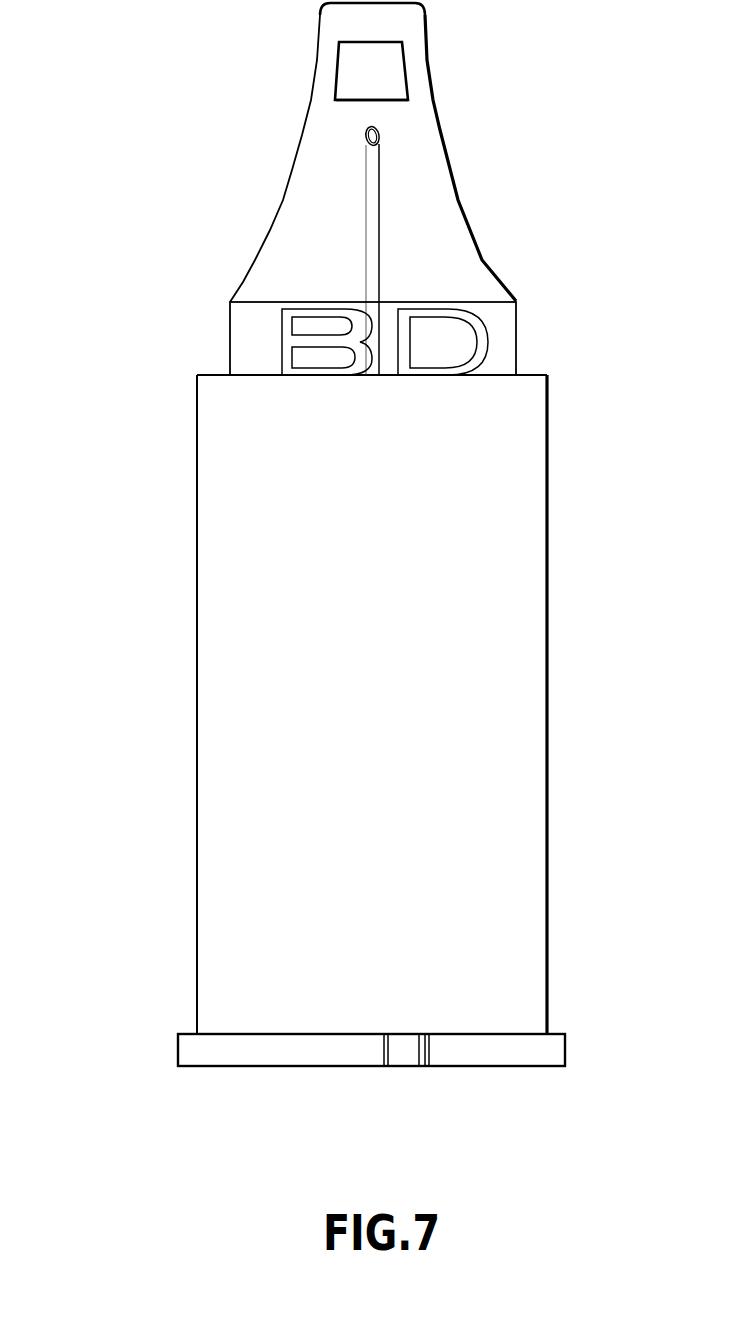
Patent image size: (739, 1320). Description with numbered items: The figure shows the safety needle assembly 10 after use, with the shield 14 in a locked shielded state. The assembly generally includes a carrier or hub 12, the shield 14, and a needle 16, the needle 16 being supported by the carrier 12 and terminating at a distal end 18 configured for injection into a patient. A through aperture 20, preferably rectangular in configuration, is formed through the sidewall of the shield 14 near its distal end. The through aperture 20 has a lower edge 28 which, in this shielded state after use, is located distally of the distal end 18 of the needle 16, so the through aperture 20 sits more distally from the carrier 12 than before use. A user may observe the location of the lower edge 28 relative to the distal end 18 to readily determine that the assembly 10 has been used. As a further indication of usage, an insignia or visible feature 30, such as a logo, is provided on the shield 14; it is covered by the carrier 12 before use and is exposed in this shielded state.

The safety needle assembly 10 is at (152, 618).
The carrier or hub 12 is at (548, 683).
The shield 14 is at (460, 197).
The needle 16 is at (365, 230).
The distal end 18 is at (367, 129).
The through aperture 20 is at (353, 73).
The lower edge 28 is at (383, 98).
The insignia or visible feature 30 is at (488, 330).